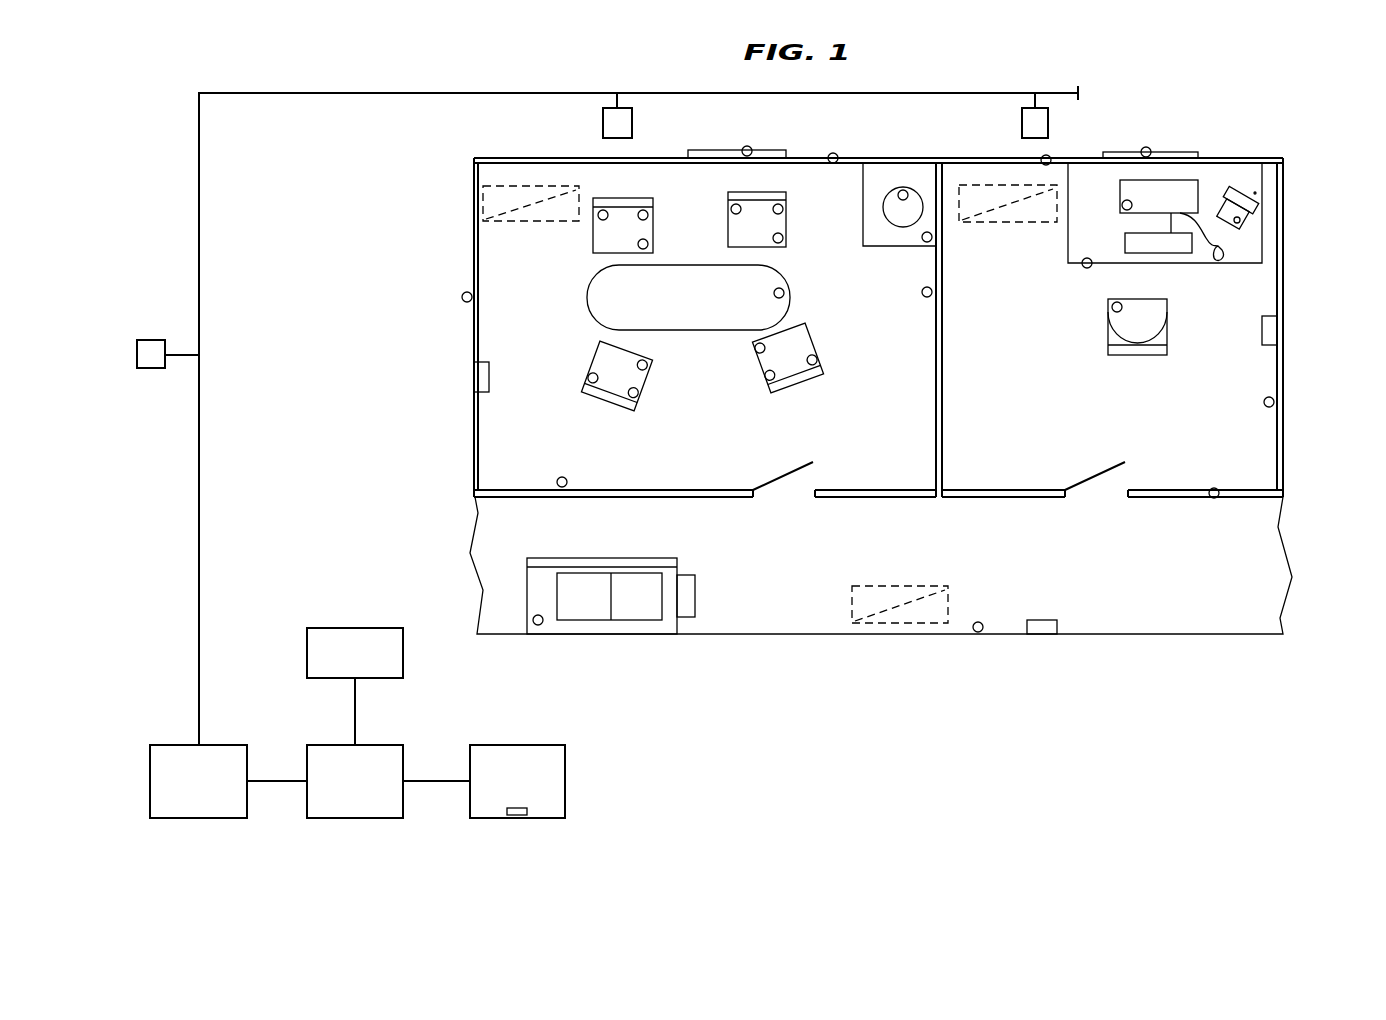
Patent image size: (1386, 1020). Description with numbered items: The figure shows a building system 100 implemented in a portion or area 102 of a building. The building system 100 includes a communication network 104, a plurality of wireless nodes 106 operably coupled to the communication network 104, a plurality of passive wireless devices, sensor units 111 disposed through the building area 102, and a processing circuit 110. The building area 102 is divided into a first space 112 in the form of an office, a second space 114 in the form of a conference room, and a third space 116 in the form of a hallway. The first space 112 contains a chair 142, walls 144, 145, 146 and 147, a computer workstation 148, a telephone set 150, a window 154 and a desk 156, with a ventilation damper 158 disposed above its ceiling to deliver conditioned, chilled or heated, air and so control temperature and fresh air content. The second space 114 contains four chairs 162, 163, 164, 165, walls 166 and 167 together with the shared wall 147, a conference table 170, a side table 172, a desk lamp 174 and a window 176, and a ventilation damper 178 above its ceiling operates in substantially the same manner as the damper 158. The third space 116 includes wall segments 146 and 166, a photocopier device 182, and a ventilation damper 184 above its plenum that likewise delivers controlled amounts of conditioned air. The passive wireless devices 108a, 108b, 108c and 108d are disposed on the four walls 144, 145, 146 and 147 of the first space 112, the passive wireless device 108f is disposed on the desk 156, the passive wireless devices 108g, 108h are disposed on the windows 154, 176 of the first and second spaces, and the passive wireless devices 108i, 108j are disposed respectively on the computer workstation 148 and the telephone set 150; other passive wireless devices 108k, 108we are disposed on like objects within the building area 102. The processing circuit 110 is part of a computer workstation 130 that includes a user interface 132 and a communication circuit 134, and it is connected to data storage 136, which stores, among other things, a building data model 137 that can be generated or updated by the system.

The building system 100 is at (731, 826).
The building area 102 is at (1062, 718).
The communication network 104 is at (199, 250).
The wireless node 106 is at (147, 339).
The passive wireless device 108a is at (1050, 156).
The passive wireless device 108b is at (1276, 402).
The passive wireless device 108c is at (1214, 500).
The passive wireless device 108d is at (933, 293).
The passive wireless device 108f is at (1083, 268).
The passive wireless device 108g is at (1146, 147).
The passive wireless device 108h is at (745, 147).
The passive wireless device 108i is at (1122, 207).
The passive wireless device 108j is at (1255, 193).
The passive wireless device 108k is at (539, 627).
The passive wireless device 108we is at (1122, 303).
The processing circuit 110 is at (356, 820).
The sensor unit 111 is at (492, 377).
The first space 112 is at (1283, 378).
The second space 114 is at (474, 268).
The third space 116 is at (770, 637).
The computer workstation 130 is at (309, 587).
The user interface 132 is at (353, 628).
The communication circuit 134 is at (198, 820).
The data storage 136 is at (567, 778).
The building data model 137 is at (516, 817).
The chair 142 is at (1133, 357).
The wall 144 is at (1268, 158).
The wall 145 is at (1287, 262).
The wall 146 is at (1165, 498).
The shared wall 147 is at (943, 405).
The computer workstation 148 is at (1145, 209).
The telephone set 150 is at (1250, 218).
The window 154 is at (1185, 150).
The desk 156 is at (1077, 200).
The ventilation damper 158 is at (1010, 185).
The chair 162 is at (787, 220).
The chair 163 is at (592, 240).
The chair 164 is at (815, 340).
The chair 165 is at (647, 385).
The wall 166 is at (706, 500).
The wall 167 is at (473, 425).
The conference table 170 is at (588, 300).
The side table 172 is at (872, 250).
The desk lamp 174 is at (903, 187).
The window 176 is at (775, 150).
The ventilation damper 178 is at (478, 200).
The photocopier device 182 is at (625, 622).
The ventilation damper 184 is at (900, 625).